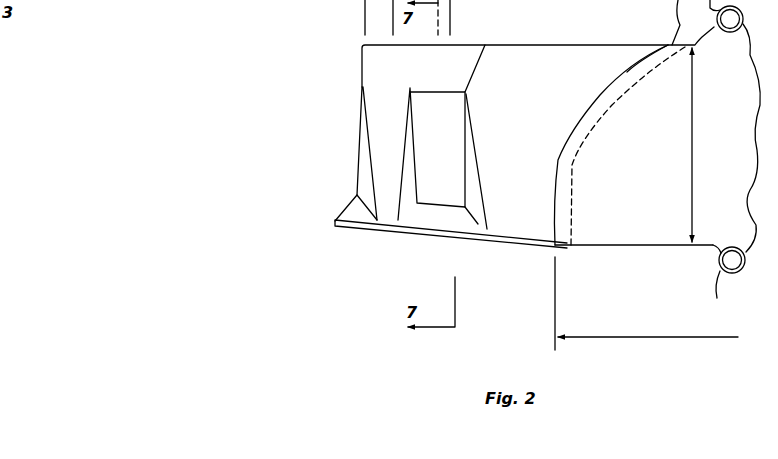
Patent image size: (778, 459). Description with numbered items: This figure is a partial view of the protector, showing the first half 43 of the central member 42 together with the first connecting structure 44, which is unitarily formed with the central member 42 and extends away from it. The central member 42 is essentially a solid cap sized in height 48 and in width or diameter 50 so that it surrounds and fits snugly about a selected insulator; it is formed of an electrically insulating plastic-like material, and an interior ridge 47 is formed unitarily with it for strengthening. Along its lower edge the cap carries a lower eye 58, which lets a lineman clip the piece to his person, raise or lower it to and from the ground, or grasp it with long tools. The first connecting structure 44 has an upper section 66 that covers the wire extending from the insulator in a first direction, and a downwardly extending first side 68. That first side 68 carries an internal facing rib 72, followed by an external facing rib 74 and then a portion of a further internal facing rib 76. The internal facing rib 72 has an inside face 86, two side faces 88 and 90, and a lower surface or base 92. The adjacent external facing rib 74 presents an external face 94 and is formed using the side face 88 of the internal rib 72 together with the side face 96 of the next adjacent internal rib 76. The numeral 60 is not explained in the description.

The central member 42 is at (660, 247).
The first half of the central member 43 is at (619, 145).
The first connecting structure 44 is at (493, 243).
The ridge 47 is at (627, 72).
The height 48 is at (692, 140).
The width or diameter 50 is at (635, 337).
The lower eye 58 is at (717, 277).
The lower edge 60 is at (580, 247).
The upper section 66 is at (508, 62).
The downwardly extending first side 68 is at (530, 223).
The internal facing rib 72 is at (442, 195).
The external facing rib 74 is at (383, 215).
The internal facing rib 76 is at (328, 143).
The inside face 86 is at (431, 154).
The side face 88 is at (408, 207).
The side face 90 is at (473, 202).
The lower surface or base 92 is at (460, 223).
The external face 94 is at (377, 143).
The side face 96 is at (363, 188).